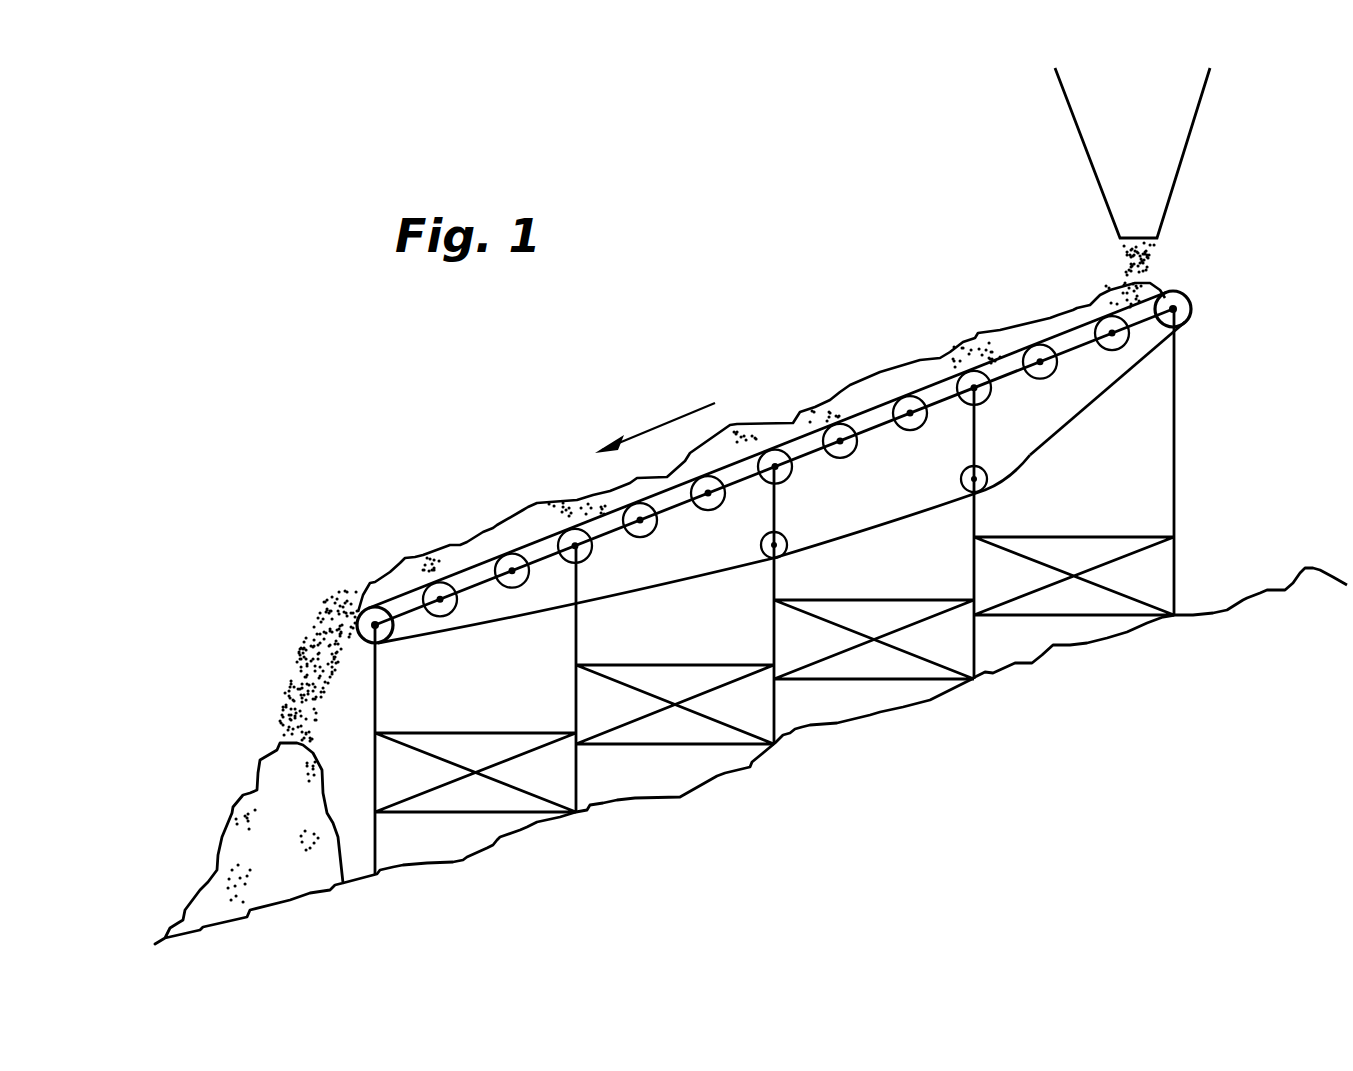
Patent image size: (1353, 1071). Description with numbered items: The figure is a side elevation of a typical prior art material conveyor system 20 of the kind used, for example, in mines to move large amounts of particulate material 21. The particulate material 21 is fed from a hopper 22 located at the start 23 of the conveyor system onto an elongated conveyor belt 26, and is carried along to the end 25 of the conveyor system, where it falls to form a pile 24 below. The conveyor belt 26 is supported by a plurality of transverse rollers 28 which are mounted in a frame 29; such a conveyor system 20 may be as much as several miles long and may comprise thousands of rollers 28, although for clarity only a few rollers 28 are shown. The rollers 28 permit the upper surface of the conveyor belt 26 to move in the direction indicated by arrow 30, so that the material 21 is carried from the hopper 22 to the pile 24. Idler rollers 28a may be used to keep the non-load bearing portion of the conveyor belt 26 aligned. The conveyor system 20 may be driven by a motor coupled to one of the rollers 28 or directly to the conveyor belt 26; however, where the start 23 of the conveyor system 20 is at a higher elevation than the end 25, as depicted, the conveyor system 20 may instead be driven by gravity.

The material conveyor system 20 is at (1183, 403).
The particulate material 21 is at (977, 337).
The hopper 22 is at (1154, 150).
The start of the conveyor system 23 is at (1170, 289).
The pile 24 is at (231, 814).
The end of the conveyor system 25 is at (360, 592).
The conveyor belt 26 is at (1080, 420).
The rollers 28 is at (982, 398).
The idler rollers 28a is at (784, 554).
The frame 29 is at (1176, 558).
The arrow 30 is at (635, 433).